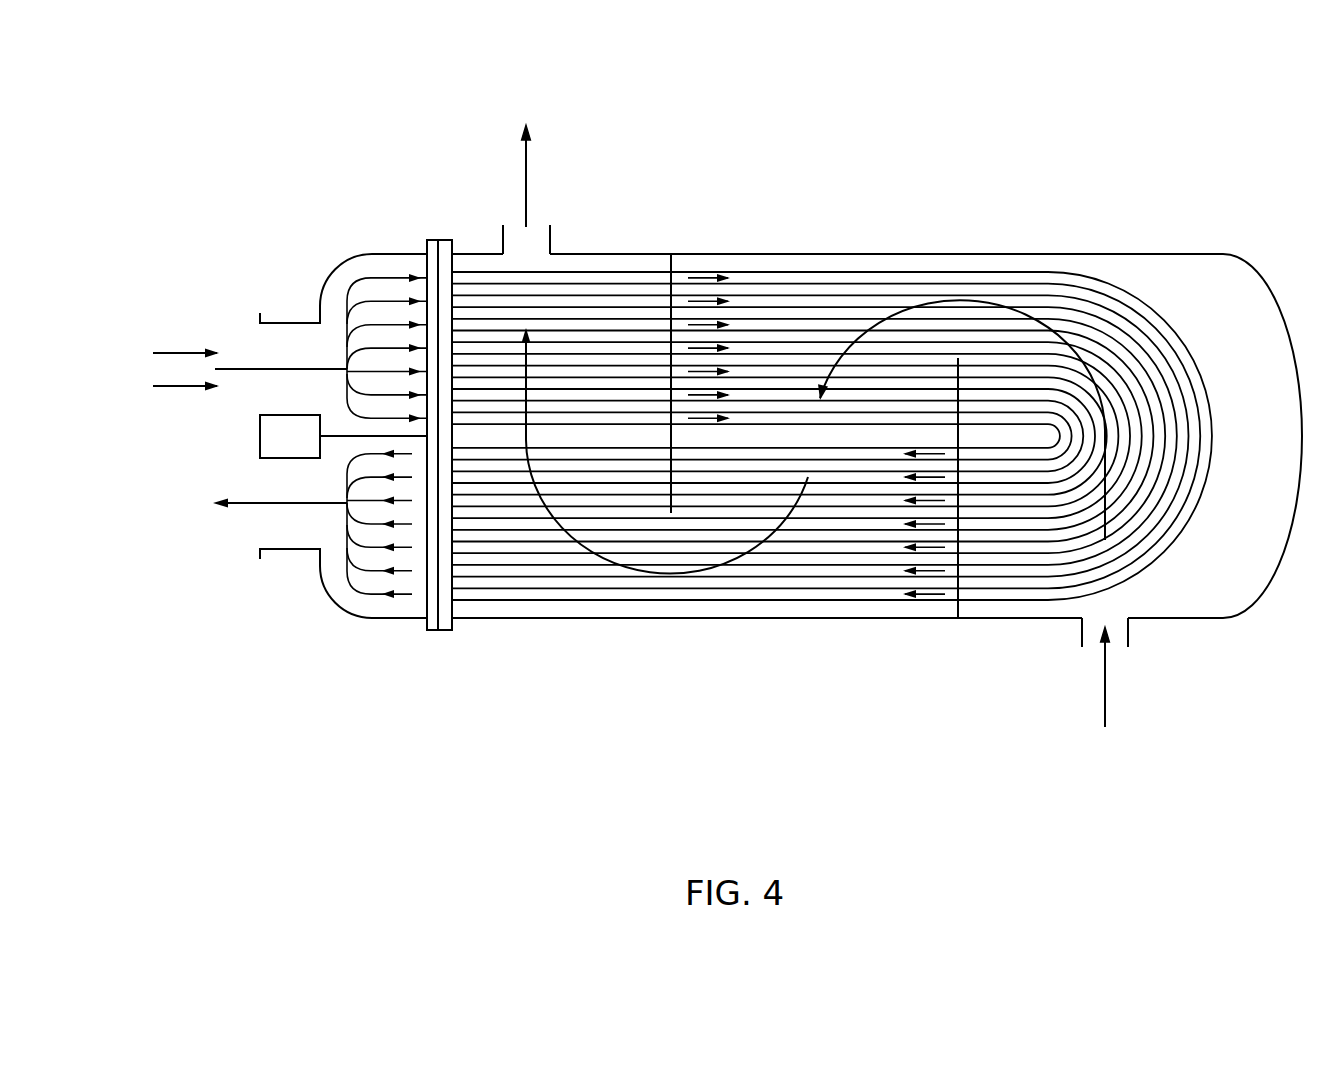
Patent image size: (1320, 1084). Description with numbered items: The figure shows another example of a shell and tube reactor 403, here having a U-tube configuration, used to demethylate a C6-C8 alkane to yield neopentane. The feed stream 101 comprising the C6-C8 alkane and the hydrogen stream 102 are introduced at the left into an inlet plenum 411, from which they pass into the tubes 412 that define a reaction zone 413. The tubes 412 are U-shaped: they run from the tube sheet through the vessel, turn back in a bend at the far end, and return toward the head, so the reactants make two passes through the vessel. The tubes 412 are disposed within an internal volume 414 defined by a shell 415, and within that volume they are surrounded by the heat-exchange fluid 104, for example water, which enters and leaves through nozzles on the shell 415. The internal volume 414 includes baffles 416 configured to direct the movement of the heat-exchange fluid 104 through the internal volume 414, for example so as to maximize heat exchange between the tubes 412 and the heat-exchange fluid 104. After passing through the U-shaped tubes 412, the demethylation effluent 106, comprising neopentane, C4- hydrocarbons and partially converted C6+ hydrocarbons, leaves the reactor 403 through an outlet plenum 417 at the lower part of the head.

The shell and tube reactor 403 is at (282, 130).
The heat-exchange fluid 104 is at (526, 172).
The feed stream 101 is at (178, 352).
The hydrogen stream 102 is at (170, 389).
The demethylation effluent 106 is at (240, 508).
The inlet plenum 411 is at (321, 268).
The tubes 412 is at (1093, 310).
The reaction zone 413 is at (790, 276).
The internal volume 414 is at (1188, 592).
The shell 415 is at (800, 620).
The baffles 416 is at (672, 258).
The outlet plenum 417 is at (322, 580).